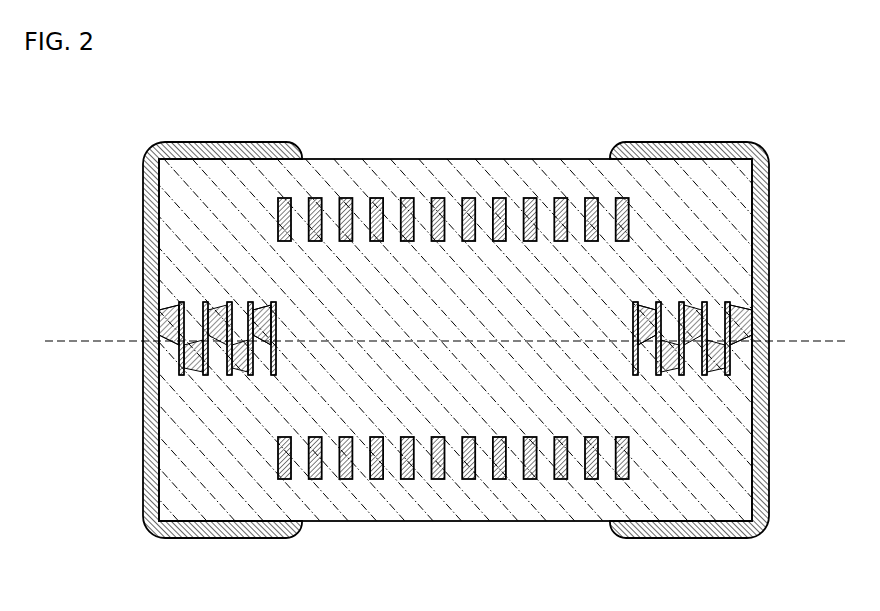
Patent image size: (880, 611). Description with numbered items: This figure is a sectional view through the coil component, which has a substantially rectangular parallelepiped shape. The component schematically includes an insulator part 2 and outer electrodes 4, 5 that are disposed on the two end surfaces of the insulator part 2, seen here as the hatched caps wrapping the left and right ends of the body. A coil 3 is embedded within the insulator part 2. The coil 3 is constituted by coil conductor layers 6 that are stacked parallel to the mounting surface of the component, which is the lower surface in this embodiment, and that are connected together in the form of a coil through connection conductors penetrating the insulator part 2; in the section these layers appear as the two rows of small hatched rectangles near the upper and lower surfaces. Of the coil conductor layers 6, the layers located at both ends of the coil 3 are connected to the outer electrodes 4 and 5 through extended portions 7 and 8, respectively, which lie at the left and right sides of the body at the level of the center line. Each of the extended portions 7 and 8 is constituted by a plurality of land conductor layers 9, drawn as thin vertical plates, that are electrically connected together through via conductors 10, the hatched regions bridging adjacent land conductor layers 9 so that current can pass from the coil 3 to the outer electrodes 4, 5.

The insulator part 2 is at (574, 190).
The coil 3 is at (633, 484).
The outer electrode 4 is at (150, 195).
The outer electrode 5 is at (763, 191).
The coil conductor layer 6 is at (382, 199).
The extended portion 7 is at (283, 388).
The extended portion 8 is at (749, 388).
The land conductor layer 9 is at (203, 300).
The via conductor 10 is at (165, 310).